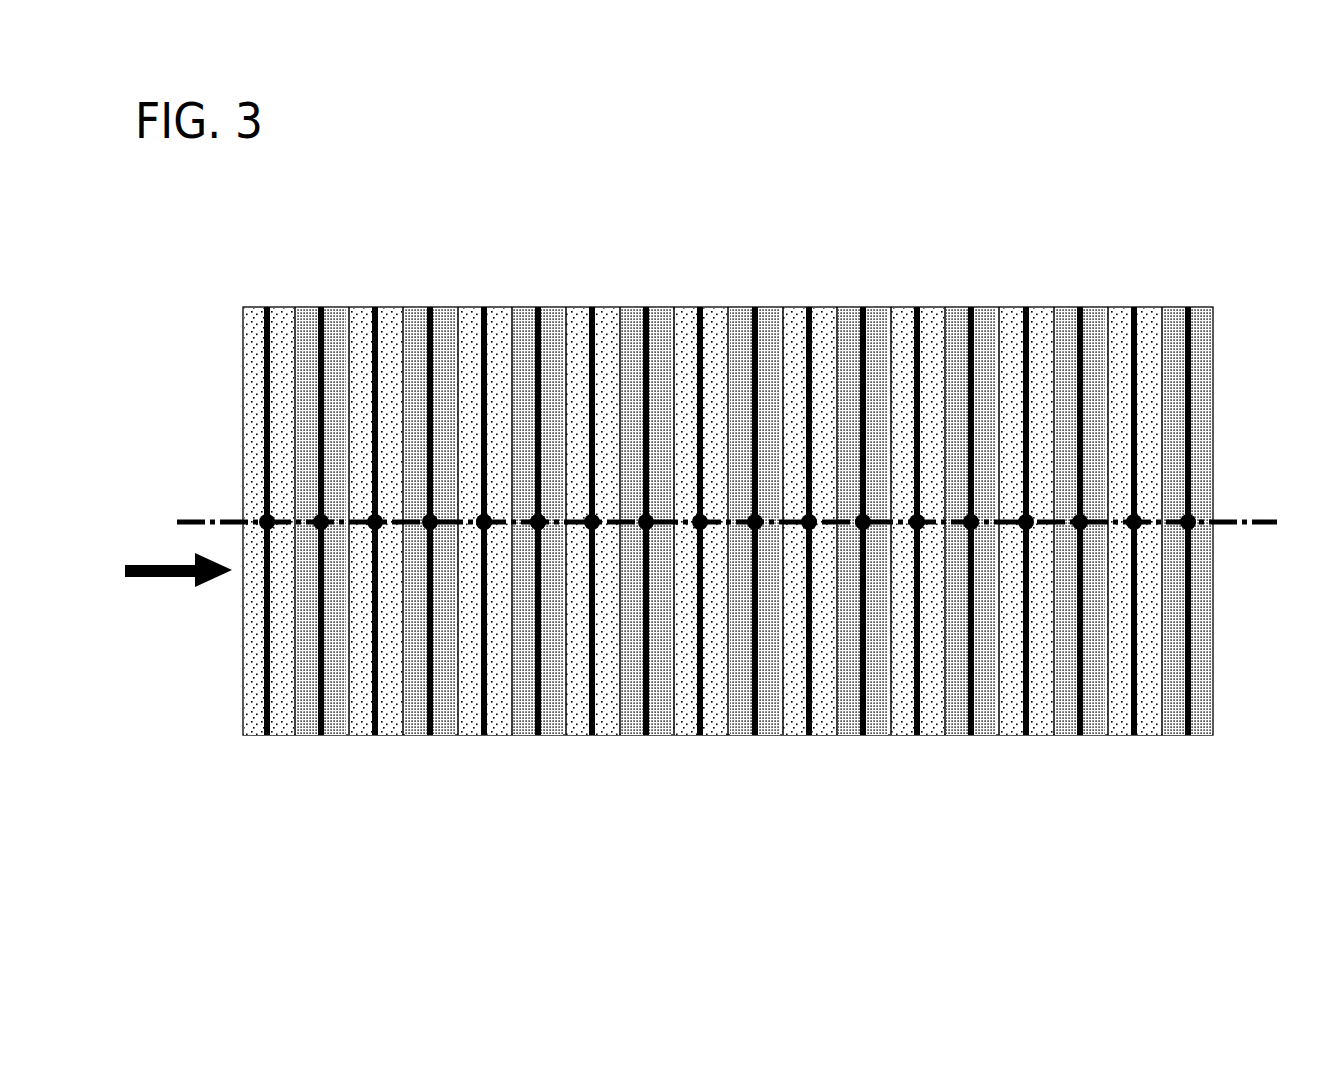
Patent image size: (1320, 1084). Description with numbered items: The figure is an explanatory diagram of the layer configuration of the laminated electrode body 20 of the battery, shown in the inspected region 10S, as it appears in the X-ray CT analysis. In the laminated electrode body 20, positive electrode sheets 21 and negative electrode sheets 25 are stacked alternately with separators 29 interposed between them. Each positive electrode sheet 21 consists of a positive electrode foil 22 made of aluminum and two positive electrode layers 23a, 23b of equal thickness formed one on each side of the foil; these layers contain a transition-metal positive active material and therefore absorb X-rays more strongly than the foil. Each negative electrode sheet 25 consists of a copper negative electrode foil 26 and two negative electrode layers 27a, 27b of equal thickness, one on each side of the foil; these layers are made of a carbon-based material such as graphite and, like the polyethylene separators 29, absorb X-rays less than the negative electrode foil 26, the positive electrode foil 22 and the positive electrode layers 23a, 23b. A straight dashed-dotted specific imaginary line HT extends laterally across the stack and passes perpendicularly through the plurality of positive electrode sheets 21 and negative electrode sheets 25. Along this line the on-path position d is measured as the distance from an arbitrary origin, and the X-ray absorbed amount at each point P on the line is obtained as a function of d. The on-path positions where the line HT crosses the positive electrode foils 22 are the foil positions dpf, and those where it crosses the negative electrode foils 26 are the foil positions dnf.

The stator core 10S is at (728, 479).
The laminated electrode body 20 is at (972, 283).
The positive electrode sheet 21 is at (702, 606).
The positive electrode foil 22 is at (375, 736).
The positive electrode layer 23a is at (363, 736).
The positive electrode layer 23b is at (395, 736).
The negative electrode sheet 25 is at (677, 580).
The negative electrode foil 26 is at (322, 736).
The negative electrode layer 27a is at (307, 736).
The negative electrode layer 27b is at (334, 736).
The separator 29 is at (348, 736).
The specific imaginary line HT is at (192, 517).
The point P(r,theta,z) P is at (767, 330).
The foil position of the positive electrode foil dpf is at (490, 515).
The foil position of the negative electrode foil dnf is at (543, 513).
The on-path position d is at (178, 562).